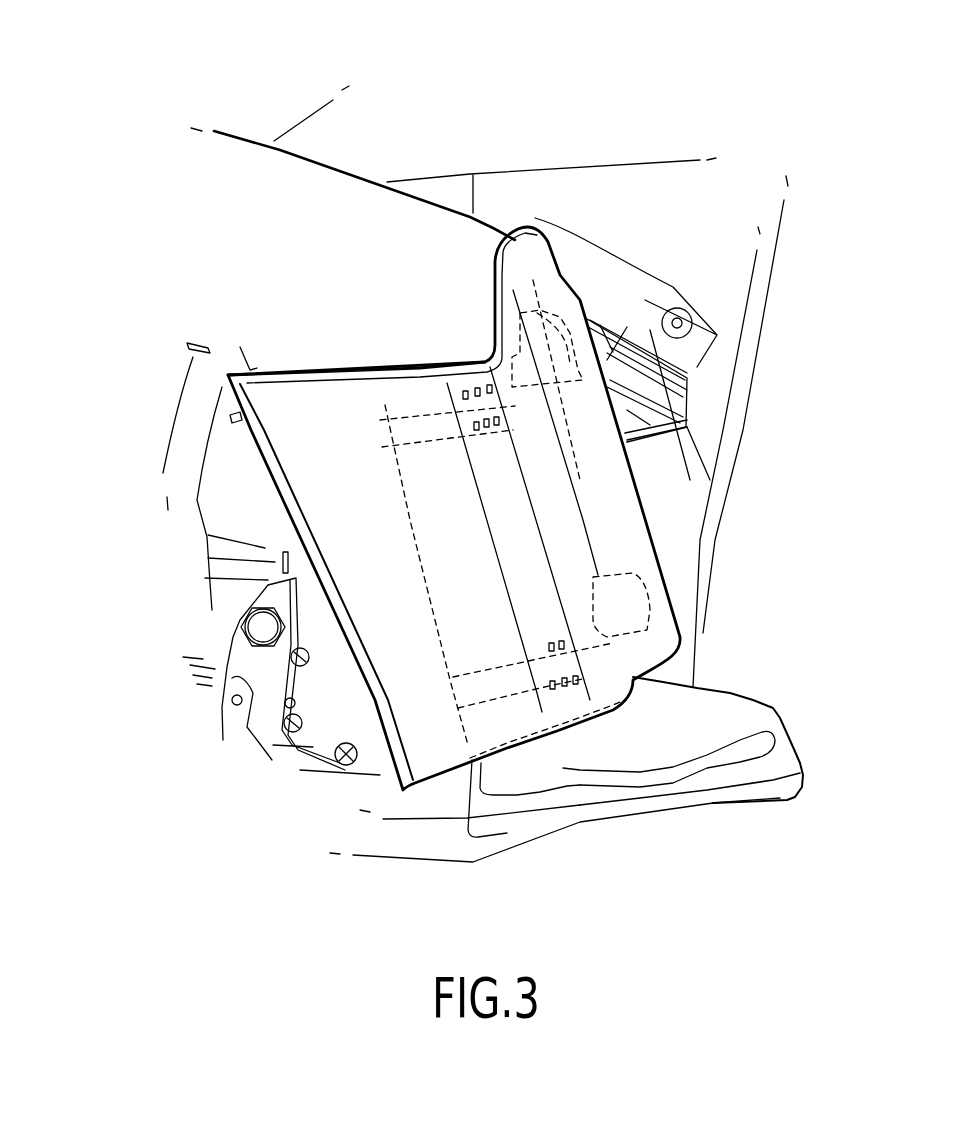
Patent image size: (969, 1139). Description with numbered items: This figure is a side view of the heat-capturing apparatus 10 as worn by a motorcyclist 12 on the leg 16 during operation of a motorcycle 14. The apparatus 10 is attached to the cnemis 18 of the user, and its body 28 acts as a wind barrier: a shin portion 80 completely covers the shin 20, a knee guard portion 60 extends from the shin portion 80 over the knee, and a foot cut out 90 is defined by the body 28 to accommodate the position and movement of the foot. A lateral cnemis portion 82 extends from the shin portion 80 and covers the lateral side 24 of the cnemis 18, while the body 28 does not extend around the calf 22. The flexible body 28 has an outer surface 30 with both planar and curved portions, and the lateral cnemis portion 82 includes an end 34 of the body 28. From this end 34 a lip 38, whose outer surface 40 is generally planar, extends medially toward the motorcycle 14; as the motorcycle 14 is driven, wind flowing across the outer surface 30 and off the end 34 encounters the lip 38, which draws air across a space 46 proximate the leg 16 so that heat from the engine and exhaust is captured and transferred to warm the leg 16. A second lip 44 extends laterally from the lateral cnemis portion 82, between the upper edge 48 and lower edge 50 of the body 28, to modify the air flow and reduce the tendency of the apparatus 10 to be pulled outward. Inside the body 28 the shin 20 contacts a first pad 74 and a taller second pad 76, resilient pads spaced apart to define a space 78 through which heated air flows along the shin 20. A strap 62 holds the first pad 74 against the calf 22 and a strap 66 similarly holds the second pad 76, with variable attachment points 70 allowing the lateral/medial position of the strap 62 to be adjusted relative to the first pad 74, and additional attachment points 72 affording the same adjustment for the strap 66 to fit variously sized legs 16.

The apparatus 10 is at (607, 277).
The motorcyclist 12 is at (227, 157).
The motorcycle 14 is at (265, 718).
The leg 16 is at (341, 233).
The cnemis 18 is at (567, 427).
The shin 20 is at (580, 480).
The calf 22 is at (413, 542).
The lateral side 24 is at (632, 677).
The body 28 is at (417, 623).
The outer surface 30 is at (328, 460).
The end 34 is at (222, 372).
The lip 38 is at (236, 373).
The outer surface of the lip 40 is at (210, 357).
The second lip 44 is at (380, 720).
The space 46 is at (315, 410).
The upper edge 48 is at (352, 368).
The lower edge 50 is at (502, 752).
The knee guard portion 60 is at (527, 245).
The strap 62 is at (426, 420).
The strap 66 is at (467, 693).
The variable attachment points 70 is at (477, 430).
The additional attachment points 72 is at (490, 612).
The first pad 74 is at (560, 323).
The second pad 76 is at (630, 590).
The space 78 is at (583, 517).
The shin portion 80 is at (615, 451).
The lateral cnemis portion 82 is at (373, 562).
The foot cut out 90 is at (655, 665).